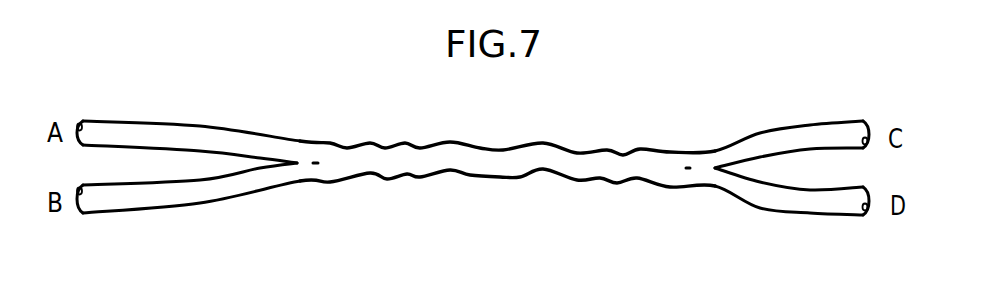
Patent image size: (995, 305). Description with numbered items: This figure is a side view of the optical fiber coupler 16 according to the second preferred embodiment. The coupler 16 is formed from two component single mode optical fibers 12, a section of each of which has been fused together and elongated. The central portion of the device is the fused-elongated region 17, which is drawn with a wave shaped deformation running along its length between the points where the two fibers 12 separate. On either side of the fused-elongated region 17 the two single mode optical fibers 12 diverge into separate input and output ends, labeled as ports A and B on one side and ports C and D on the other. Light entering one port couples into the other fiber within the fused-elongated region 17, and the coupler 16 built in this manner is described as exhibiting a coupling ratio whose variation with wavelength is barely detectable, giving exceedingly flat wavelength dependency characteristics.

The single mode optical fiber 12 is at (805, 122).
The optical fiber coupler 16 is at (598, 141).
The fused-elongated region 17 is at (500, 178).